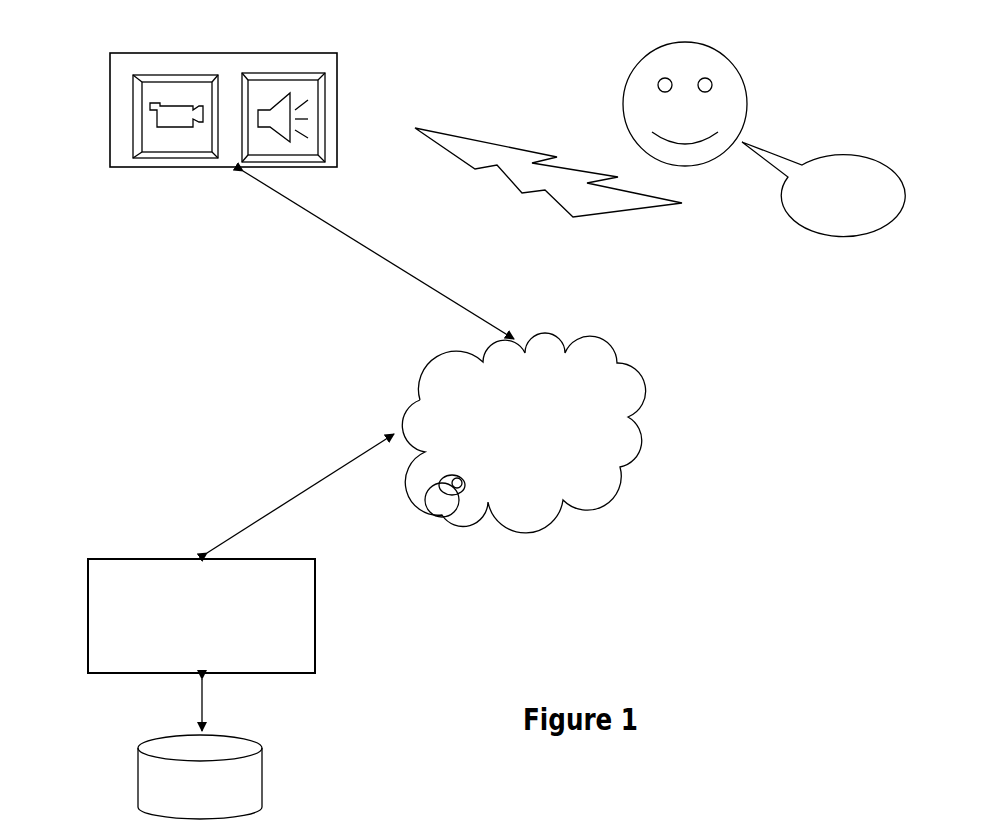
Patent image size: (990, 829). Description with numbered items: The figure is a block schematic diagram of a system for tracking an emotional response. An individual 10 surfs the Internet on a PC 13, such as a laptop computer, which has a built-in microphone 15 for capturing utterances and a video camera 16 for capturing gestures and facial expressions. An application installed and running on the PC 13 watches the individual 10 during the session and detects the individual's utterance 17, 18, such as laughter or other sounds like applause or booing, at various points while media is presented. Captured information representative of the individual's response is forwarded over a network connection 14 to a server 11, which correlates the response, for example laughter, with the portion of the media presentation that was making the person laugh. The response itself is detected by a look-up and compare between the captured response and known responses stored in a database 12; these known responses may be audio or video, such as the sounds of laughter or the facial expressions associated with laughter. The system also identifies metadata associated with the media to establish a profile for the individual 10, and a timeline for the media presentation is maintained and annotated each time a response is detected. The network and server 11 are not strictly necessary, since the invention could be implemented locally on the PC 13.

The individual 10 is at (723, 50).
The server 11 is at (315, 610).
The database 12 is at (252, 787).
The PC 13 is at (337, 57).
The network connection 14 is at (617, 363).
The microphone 15 is at (303, 162).
The video camera 16 is at (146, 75).
The utterance 17 is at (892, 183).
The utterance 18 is at (592, 218).